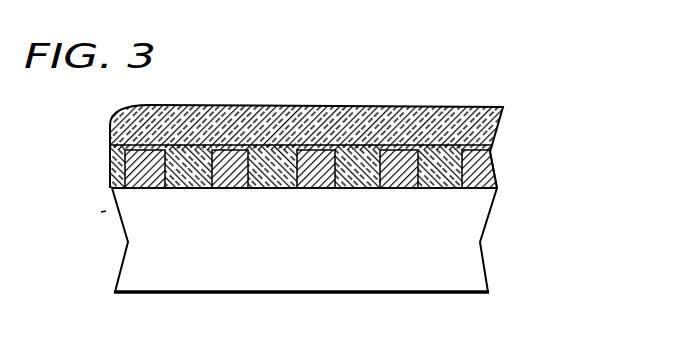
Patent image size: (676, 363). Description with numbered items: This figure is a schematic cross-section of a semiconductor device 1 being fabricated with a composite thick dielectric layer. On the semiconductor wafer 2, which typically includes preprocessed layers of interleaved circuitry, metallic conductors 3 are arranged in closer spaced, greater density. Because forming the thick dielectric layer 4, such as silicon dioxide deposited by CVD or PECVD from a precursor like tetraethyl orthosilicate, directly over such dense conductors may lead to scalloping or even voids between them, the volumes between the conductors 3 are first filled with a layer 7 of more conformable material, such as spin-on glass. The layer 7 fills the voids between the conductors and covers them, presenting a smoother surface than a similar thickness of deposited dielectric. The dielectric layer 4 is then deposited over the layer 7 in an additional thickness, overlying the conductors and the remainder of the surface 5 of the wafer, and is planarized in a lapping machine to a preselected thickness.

The semiconductor device 1 is at (315, 79).
The semiconductor wafer 2 is at (465, 261).
The metallic conductors 3 is at (492, 160).
The thick dielectric layer 4 is at (472, 110).
The surface 5 is at (264, 188).
The layer of more conformable material 7 is at (193, 140).